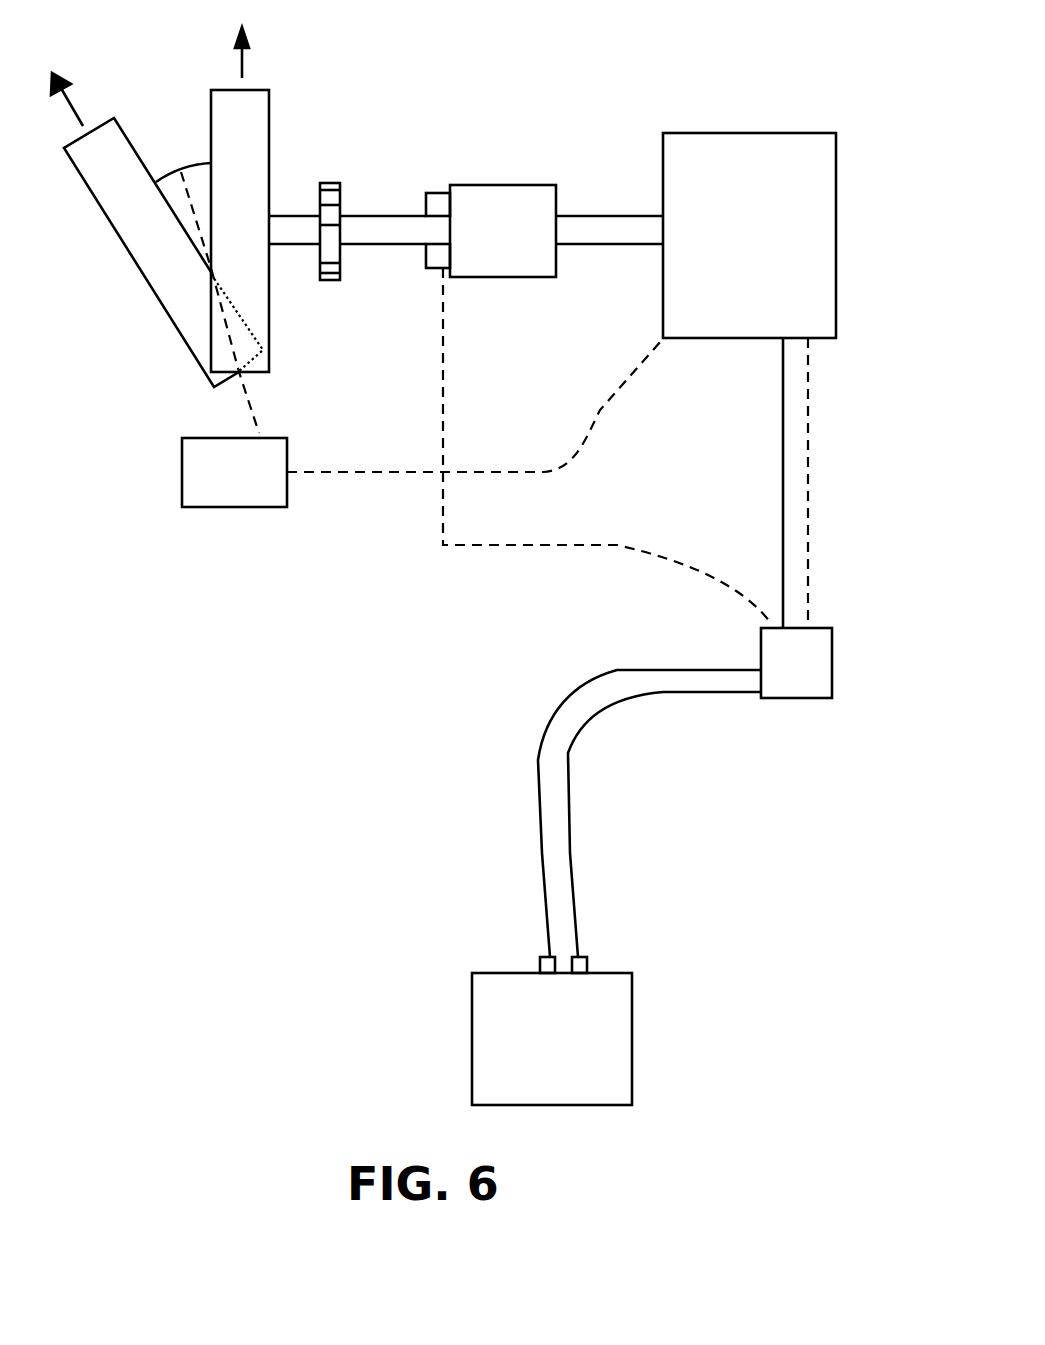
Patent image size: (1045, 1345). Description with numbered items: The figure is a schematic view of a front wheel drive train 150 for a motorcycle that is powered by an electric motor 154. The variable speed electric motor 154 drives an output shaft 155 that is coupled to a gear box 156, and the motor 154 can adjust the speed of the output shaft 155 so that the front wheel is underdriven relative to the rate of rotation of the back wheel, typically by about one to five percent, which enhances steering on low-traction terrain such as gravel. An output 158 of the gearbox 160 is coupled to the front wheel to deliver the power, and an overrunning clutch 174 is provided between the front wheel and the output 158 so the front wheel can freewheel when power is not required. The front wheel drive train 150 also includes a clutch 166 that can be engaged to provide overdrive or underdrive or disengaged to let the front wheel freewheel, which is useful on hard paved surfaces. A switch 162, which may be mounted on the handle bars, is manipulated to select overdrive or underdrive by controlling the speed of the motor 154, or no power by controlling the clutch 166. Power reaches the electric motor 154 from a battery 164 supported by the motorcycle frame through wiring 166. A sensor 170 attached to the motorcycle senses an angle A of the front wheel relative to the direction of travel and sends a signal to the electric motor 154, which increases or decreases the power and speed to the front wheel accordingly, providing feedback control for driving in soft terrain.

The front wheel drive train 150 is at (310, 735).
The electric motor 154 is at (137, 265).
The output shaft 155 is at (612, 215).
The gear box 156 is at (508, 185).
The output 158 is at (390, 215).
The gearbox 160 is at (442, 193).
The switch 162 is at (807, 700).
The battery 164 is at (472, 1035).
The wiring 166 is at (782, 473).
The sensor 170 is at (237, 508).
The overrunning clutch 174 is at (333, 182).
The angle A is at (183, 161).